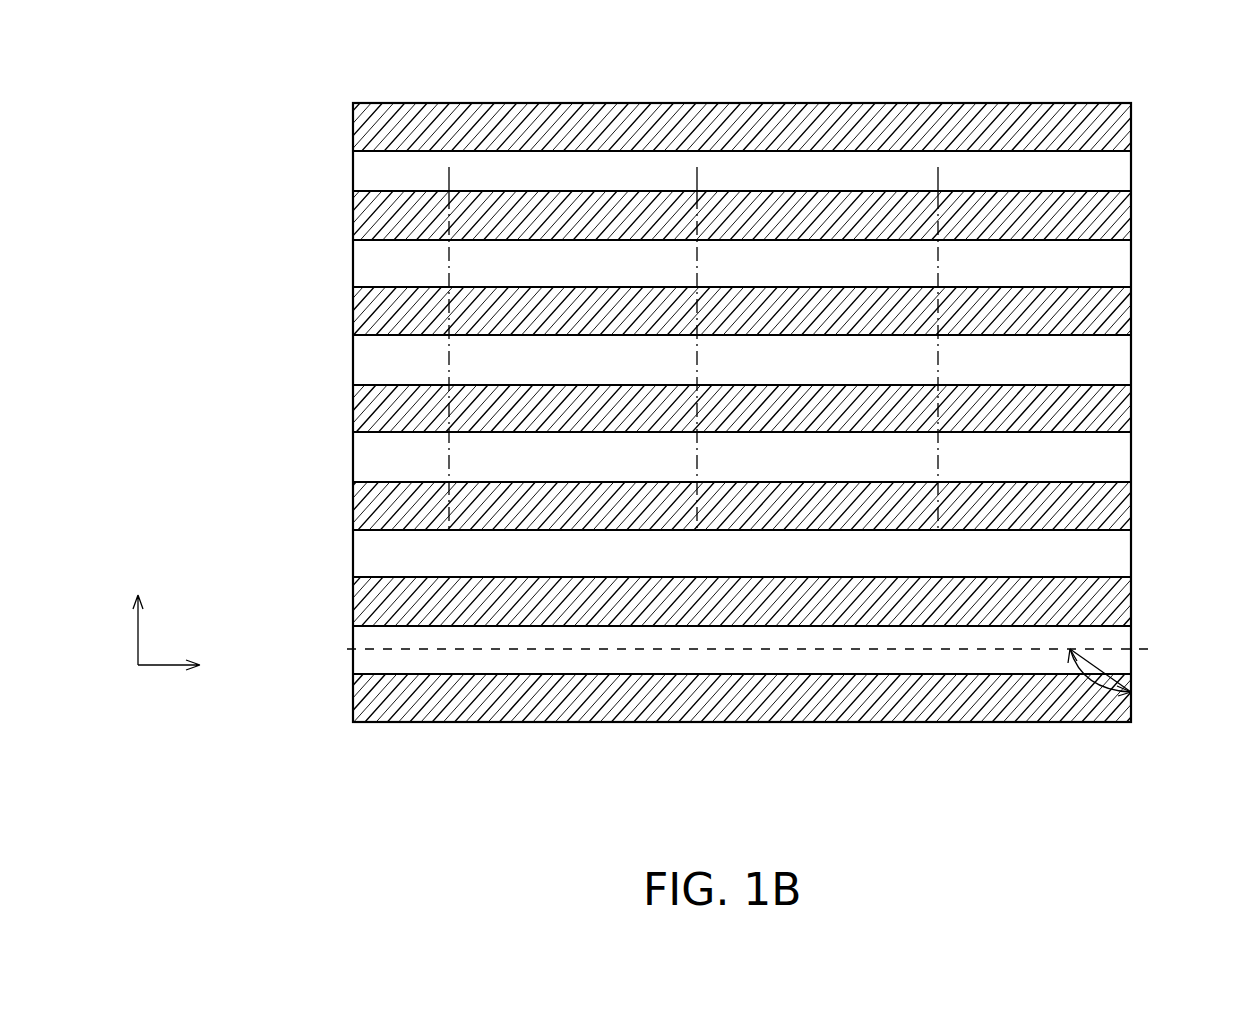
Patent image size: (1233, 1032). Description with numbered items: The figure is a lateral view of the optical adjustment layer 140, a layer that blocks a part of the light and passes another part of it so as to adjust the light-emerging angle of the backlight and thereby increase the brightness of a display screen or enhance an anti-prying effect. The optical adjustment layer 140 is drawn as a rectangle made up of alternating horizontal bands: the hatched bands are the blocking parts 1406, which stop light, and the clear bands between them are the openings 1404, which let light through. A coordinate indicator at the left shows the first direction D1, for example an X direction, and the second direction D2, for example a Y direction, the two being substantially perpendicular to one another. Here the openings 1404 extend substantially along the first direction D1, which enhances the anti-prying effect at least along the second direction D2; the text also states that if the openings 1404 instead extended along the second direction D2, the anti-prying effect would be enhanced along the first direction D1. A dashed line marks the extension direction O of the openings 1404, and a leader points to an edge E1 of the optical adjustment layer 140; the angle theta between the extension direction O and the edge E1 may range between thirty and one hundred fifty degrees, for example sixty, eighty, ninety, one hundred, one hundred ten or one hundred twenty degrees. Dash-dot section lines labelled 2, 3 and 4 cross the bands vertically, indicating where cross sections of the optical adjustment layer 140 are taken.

The optical adjustment layer 140 is at (240, 100).
The blocking parts 1406 is at (1131, 127).
The openings 1404 is at (1131, 170).
The section line 2-2' 2 is at (449, 167).
The section line 3-3' 3 is at (697, 167).
The section line 4-4' 4 is at (938, 167).
The extension direction O is at (762, 649).
The edge E1 is at (1168, 452).
The angle θ theta is at (1093, 690).
The first direction D1 is at (189, 666).
The second direction D2 is at (138, 613).